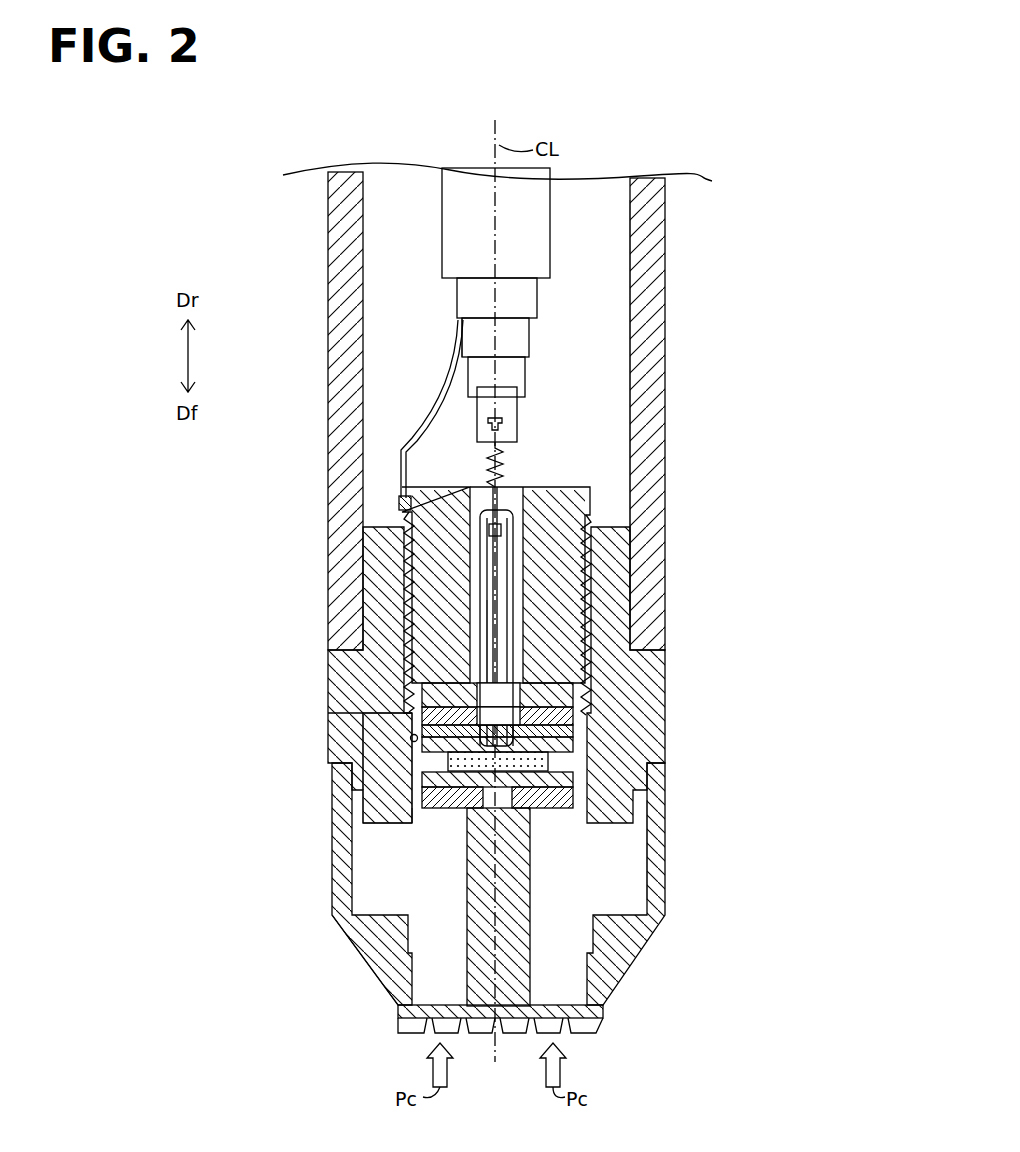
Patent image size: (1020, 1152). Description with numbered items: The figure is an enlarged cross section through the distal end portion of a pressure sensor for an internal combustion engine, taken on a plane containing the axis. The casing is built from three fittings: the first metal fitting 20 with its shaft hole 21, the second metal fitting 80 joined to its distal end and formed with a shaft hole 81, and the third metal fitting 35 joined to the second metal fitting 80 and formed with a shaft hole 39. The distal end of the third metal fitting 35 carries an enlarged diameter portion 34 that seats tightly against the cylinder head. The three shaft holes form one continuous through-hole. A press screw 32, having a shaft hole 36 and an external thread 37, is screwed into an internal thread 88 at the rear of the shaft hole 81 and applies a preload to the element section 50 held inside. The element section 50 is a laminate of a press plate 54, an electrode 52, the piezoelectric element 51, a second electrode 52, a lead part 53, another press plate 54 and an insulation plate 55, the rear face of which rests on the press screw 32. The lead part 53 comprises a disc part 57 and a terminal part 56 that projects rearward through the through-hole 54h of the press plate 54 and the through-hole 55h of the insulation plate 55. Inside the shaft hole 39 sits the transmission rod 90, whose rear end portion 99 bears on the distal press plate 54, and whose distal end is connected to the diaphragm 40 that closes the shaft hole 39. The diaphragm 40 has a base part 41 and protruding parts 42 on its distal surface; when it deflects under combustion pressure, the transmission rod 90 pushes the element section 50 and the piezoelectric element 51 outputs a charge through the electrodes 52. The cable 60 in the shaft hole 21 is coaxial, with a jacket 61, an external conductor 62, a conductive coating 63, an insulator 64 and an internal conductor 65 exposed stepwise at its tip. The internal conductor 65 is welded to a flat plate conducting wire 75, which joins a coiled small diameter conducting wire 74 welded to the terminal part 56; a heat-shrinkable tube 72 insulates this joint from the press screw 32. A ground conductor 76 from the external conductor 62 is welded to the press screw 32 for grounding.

The first metal fitting 20 is at (635, 470).
The shaft hole 21 is at (625, 262).
The press screw 32 is at (437, 595).
The enlarged diameter portion 34 is at (360, 950).
The third metal fitting 35 is at (340, 830).
The shaft hole 36 is at (383, 665).
The external thread 37 is at (405, 570).
The shaft hole 39 is at (640, 890).
The diaphragm 40 is at (447, 1056).
The base part 41 is at (398, 1012).
The protruding parts 42 is at (400, 1025).
The element section 50 is at (621, 747).
The piezoelectric element 51 is at (548, 765).
The electrodes 52 is at (560, 745).
The lead part 53 is at (560, 731).
The press plate 54 is at (560, 712).
The through-hole 54h is at (520, 715).
The insulation plate 55 is at (560, 690).
The through-hole 55h is at (515, 685).
The terminal part 56 is at (505, 628).
The disc part 57 is at (407, 712).
The cable 60 is at (518, 327).
The jacket 61 is at (442, 235).
The external conductor 62 is at (470, 298).
The conductive coating 63 is at (530, 327).
The insulator 64 is at (517, 347).
The internal conductor 65 is at (510, 377).
The heat-shrinkable tube 72 is at (478, 545).
The small diameter conducting wire 74 is at (595, 500).
The flat plate conducting wire 75 is at (505, 415).
The ground conductor 76 is at (437, 388).
The second metal fitting 80 is at (353, 688).
The shaft hole 81 is at (410, 735).
The internal thread 88 is at (400, 618).
The transmission rod 90 is at (470, 853).
The rear end portion 99 is at (412, 822).